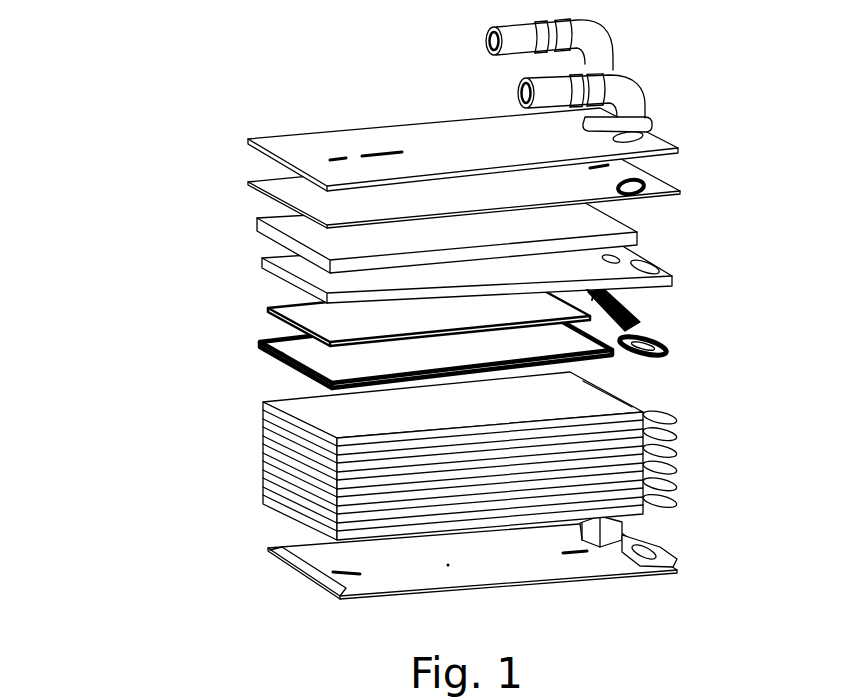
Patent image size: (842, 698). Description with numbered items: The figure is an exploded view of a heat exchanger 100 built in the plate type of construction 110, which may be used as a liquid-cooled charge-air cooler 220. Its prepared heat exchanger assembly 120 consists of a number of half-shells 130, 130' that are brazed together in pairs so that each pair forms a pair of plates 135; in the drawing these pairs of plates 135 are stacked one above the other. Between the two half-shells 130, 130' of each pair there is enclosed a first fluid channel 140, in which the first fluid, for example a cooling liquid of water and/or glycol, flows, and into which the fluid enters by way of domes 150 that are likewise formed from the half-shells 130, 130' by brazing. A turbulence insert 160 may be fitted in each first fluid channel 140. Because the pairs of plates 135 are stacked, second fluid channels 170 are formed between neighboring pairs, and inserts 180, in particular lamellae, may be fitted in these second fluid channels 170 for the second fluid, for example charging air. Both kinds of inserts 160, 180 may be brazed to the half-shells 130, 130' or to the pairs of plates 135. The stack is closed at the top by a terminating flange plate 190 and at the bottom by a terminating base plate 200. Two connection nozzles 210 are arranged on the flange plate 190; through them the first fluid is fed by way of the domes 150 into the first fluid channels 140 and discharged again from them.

The heat exchanger 100 is at (212, 109).
The plate type of construction 110 is at (246, 455).
The heat exchanger assembly 120 is at (193, 262).
The half-shell 130 is at (412, 274).
The half-shell 130' is at (416, 351).
The pair of plates 135 is at (678, 417).
The first fluid channel 140 is at (314, 361).
The dome 150 is at (643, 337).
The turbulence insert 160 is at (268, 313).
The second fluid channel 170 is at (268, 206).
The insert 180 is at (258, 221).
The terminating flange plate 190 is at (347, 128).
The terminating base plate 200 is at (307, 575).
The connection nozzle 210 is at (487, 30).
The liquid-cooled charge-air cooler 220 is at (150, 120).